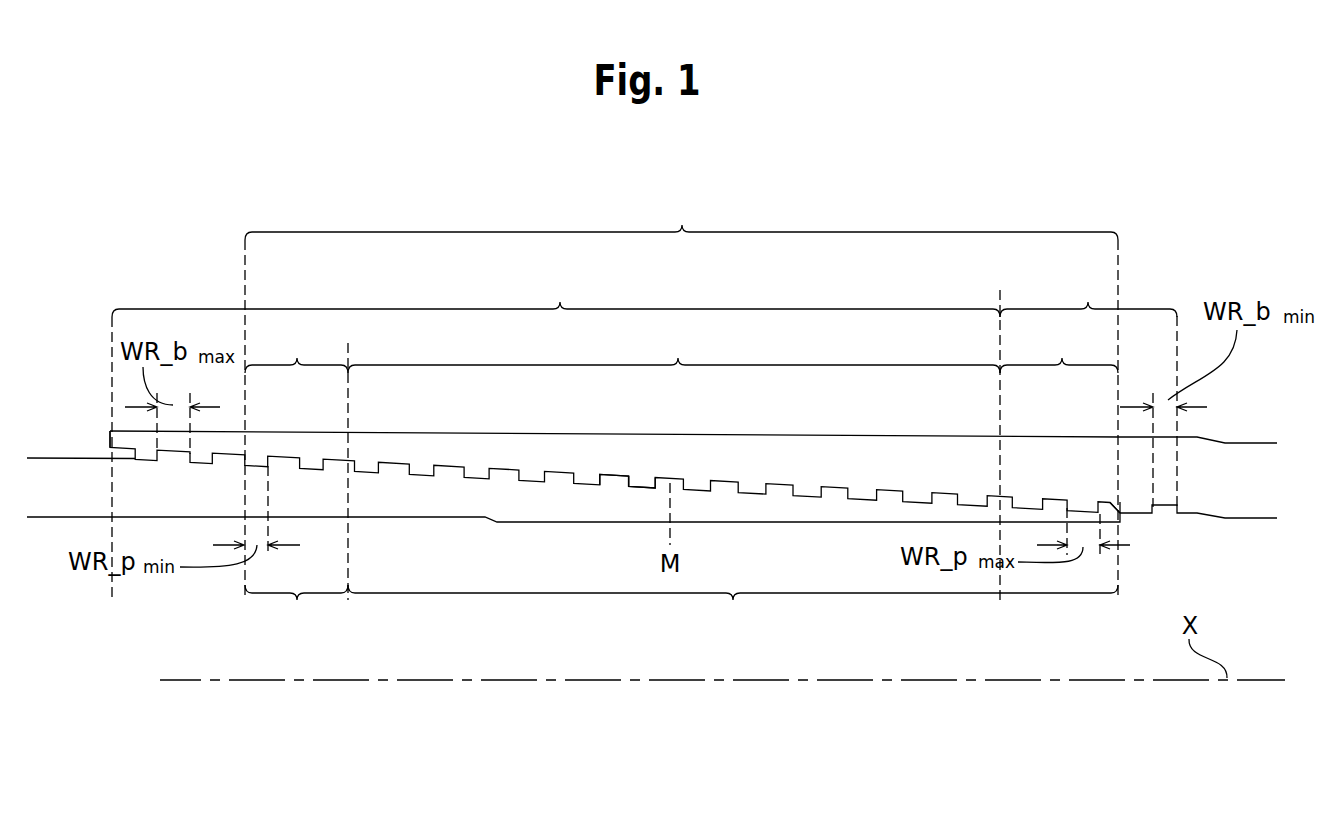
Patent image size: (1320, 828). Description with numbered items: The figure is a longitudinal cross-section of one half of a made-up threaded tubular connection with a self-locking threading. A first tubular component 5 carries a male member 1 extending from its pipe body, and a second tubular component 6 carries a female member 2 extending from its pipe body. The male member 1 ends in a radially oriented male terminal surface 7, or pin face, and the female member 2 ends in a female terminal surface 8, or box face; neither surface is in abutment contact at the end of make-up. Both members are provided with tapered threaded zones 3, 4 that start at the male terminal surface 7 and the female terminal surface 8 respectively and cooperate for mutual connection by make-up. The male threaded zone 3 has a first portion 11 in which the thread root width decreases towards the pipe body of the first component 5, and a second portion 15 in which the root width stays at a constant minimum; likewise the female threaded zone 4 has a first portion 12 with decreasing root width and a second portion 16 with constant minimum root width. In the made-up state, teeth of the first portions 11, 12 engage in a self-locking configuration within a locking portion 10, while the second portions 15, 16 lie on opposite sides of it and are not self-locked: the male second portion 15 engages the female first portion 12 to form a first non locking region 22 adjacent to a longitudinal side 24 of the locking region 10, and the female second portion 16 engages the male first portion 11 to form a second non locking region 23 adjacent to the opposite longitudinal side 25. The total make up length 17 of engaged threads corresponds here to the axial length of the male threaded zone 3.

The male member 1 is at (520, 533).
The female member 2 is at (546, 421).
The male threaded zone 3 is at (615, 480).
The female threaded zone 4 is at (643, 478).
The first tubular component 5 is at (58, 503).
The second tubular component 6 is at (1246, 491).
The male terminal surface 7 is at (1122, 517).
The female terminal surface 8 is at (110, 440).
The locking portion 10 is at (674, 353).
The first portion of the male thread 11 is at (733, 609).
The first portion of the female thread 12 is at (556, 437).
The second portion of the male thread 15 is at (296, 609).
The second portion of the female thread 16 is at (1088, 295).
The total make up length 17 is at (681, 397).
The first non locking region 22 is at (296, 353).
The second non locking region 23 is at (1059, 353).
The longitudinal side of the locking region 24 is at (345, 458).
The opposite longitudinal side of the locking region 25 is at (1000, 431).